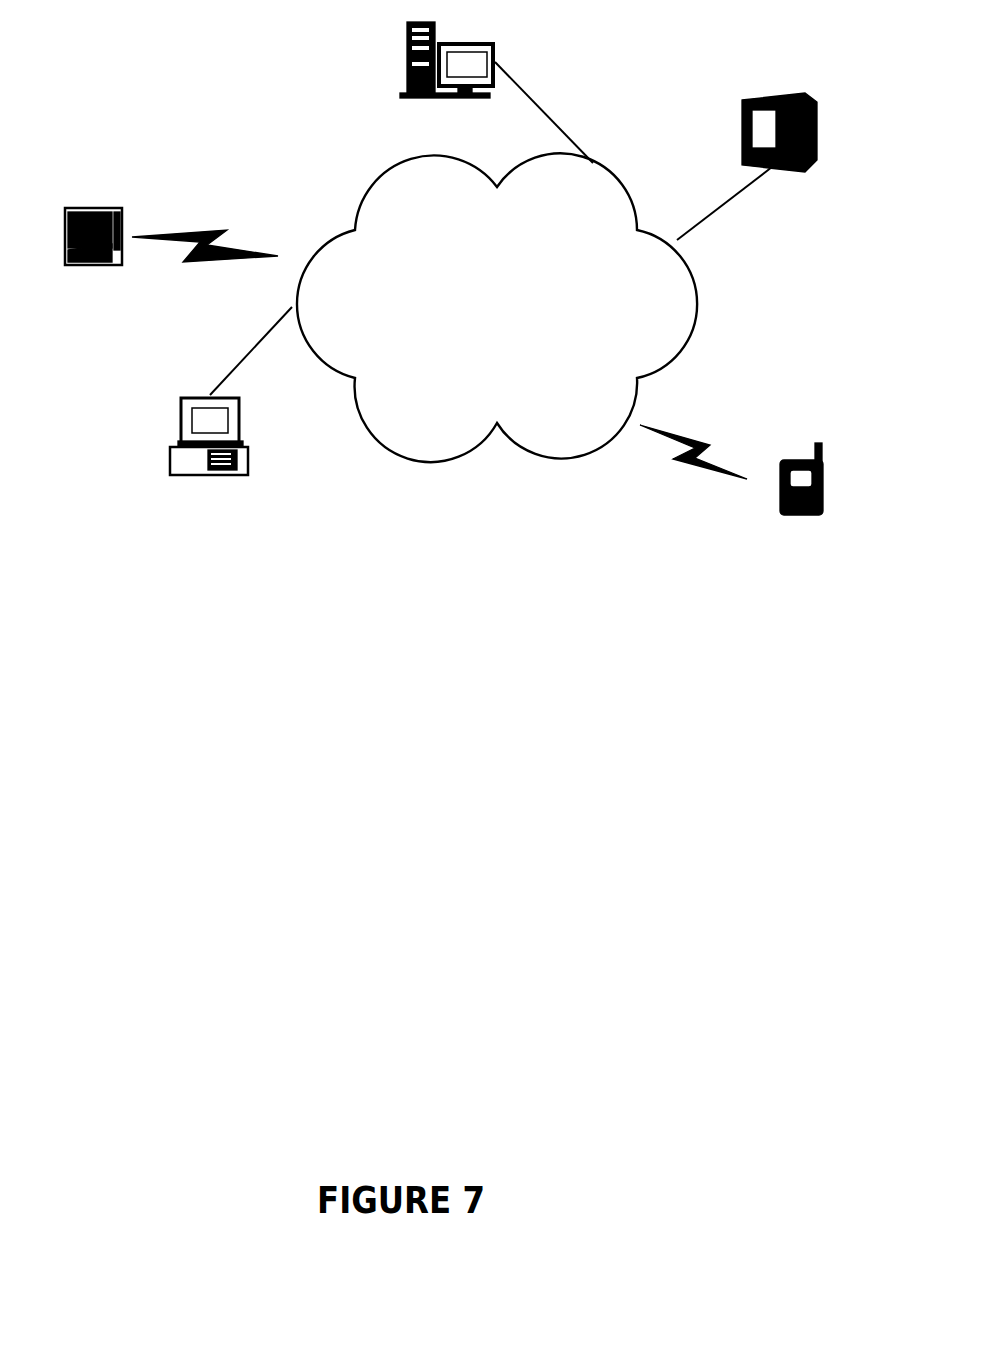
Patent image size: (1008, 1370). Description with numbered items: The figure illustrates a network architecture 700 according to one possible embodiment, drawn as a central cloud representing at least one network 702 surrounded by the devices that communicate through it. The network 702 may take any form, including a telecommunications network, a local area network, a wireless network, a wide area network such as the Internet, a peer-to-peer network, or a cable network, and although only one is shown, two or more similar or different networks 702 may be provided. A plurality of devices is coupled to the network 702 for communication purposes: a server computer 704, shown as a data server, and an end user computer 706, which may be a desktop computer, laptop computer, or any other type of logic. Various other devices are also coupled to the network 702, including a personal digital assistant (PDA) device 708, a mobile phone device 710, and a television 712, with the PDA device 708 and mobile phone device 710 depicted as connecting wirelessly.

The network architecture 700 is at (403, 760).
The network 702 is at (557, 455).
The server computer 704 is at (407, 60).
The end user computer 706 is at (172, 453).
The personal digital assistant (PDA) device 708 is at (92, 210).
The mobile phone device 710 is at (778, 462).
The television 712 is at (755, 94).